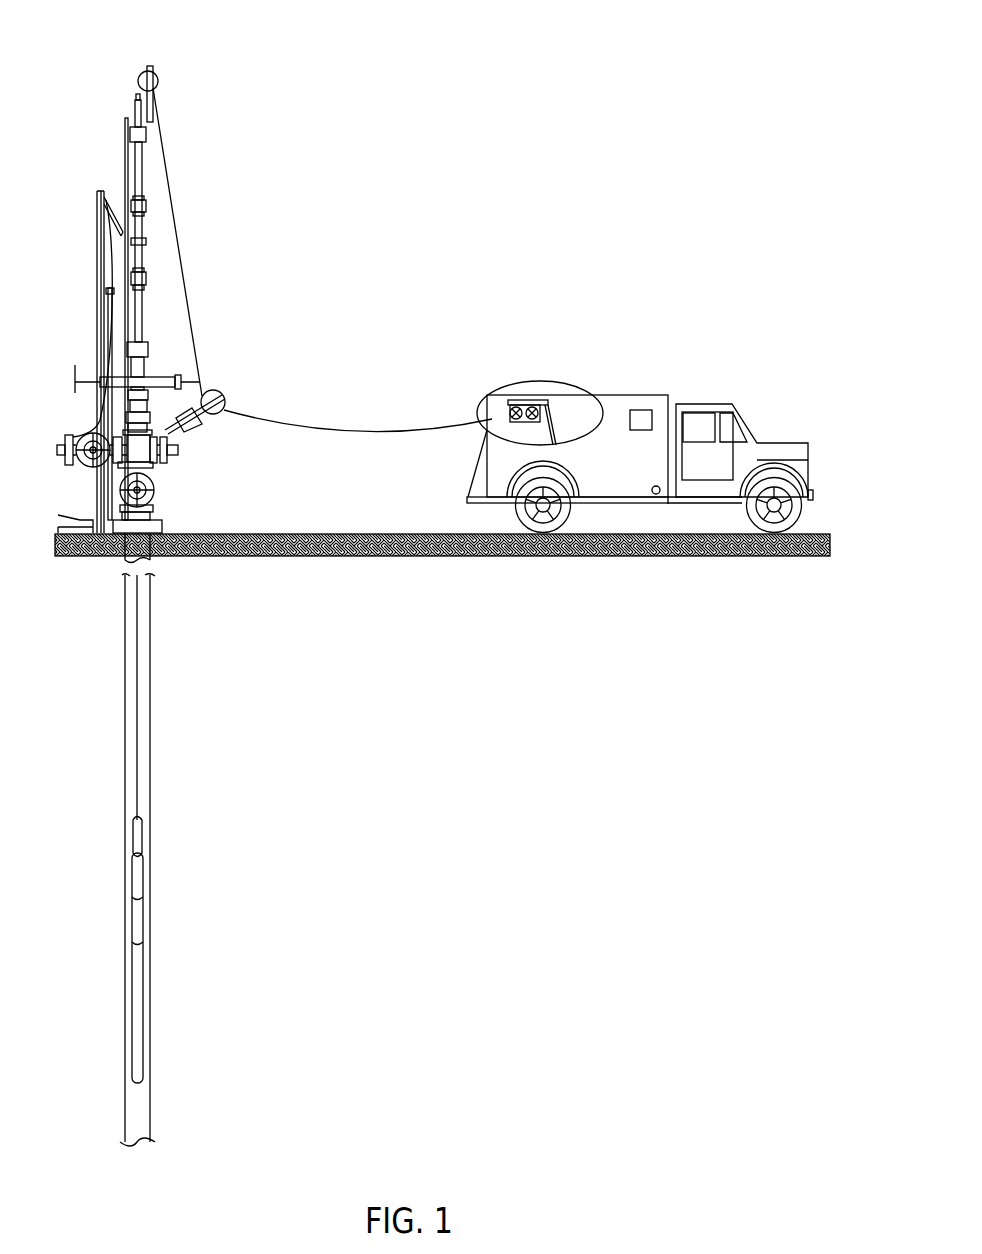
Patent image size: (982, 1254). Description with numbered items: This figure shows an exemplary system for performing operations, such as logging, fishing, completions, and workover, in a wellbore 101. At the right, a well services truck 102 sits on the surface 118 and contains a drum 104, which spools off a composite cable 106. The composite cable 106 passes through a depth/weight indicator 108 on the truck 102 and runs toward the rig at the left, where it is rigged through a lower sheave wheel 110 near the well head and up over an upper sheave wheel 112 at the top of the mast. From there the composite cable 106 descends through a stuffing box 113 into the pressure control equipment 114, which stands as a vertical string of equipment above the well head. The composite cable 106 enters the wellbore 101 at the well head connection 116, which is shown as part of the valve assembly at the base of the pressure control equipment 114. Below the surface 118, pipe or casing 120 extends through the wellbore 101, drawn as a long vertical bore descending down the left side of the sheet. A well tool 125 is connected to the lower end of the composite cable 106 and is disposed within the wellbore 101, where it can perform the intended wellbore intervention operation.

The wellbore 101 is at (147, 585).
The well services truck 102 is at (722, 403).
The drum 104 is at (592, 432).
The composite cable 106 is at (382, 428).
The depth/weight indicator 108 is at (528, 400).
The lower sheave wheel 110 is at (218, 390).
The upper sheave wheel 112 is at (158, 82).
The stuffing box 113 is at (146, 135).
The pressure control equipment 114 is at (142, 180).
The well head connection 116 is at (180, 452).
The surface 118 is at (392, 533).
The pipe or casing 120 is at (124, 658).
The well tool 125 is at (138, 870).